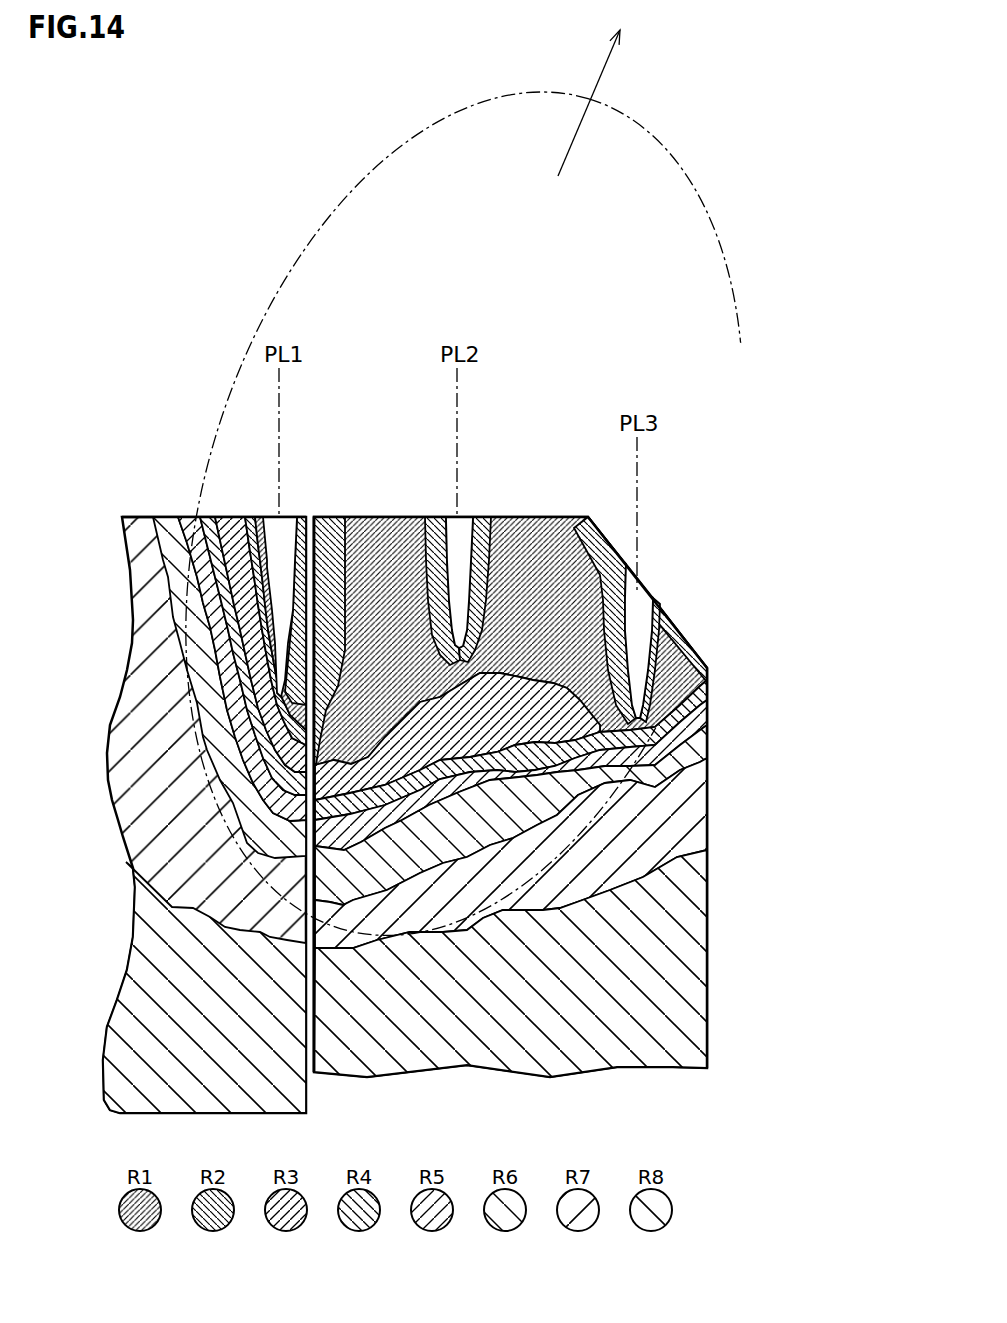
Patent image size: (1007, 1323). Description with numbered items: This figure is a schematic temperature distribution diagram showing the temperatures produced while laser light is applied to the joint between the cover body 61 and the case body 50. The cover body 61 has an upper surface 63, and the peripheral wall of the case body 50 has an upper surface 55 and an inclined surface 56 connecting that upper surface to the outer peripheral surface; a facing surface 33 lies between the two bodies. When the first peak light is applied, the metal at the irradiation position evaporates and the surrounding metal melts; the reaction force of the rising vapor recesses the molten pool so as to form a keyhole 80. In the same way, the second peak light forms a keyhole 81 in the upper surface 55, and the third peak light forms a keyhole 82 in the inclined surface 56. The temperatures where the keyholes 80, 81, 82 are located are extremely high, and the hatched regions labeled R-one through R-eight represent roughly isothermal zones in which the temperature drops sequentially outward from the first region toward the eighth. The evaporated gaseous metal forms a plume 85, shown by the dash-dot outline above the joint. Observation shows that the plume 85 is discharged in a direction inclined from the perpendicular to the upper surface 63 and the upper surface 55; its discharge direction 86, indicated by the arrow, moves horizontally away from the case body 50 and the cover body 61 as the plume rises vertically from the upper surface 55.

The facing surface 33 is at (312, 1097).
The case body 50 is at (497, 725).
The upper surface 55 is at (398, 517).
The inclined surface 56 is at (690, 650).
The cover body 61 is at (177, 777).
The upper surface 63 is at (176, 517).
The keyhole 80 is at (268, 517).
The keyhole 81 is at (450, 517).
The keyhole 82 is at (642, 583).
The plume 85 is at (717, 499).
The discharge direction 86 is at (609, 103).